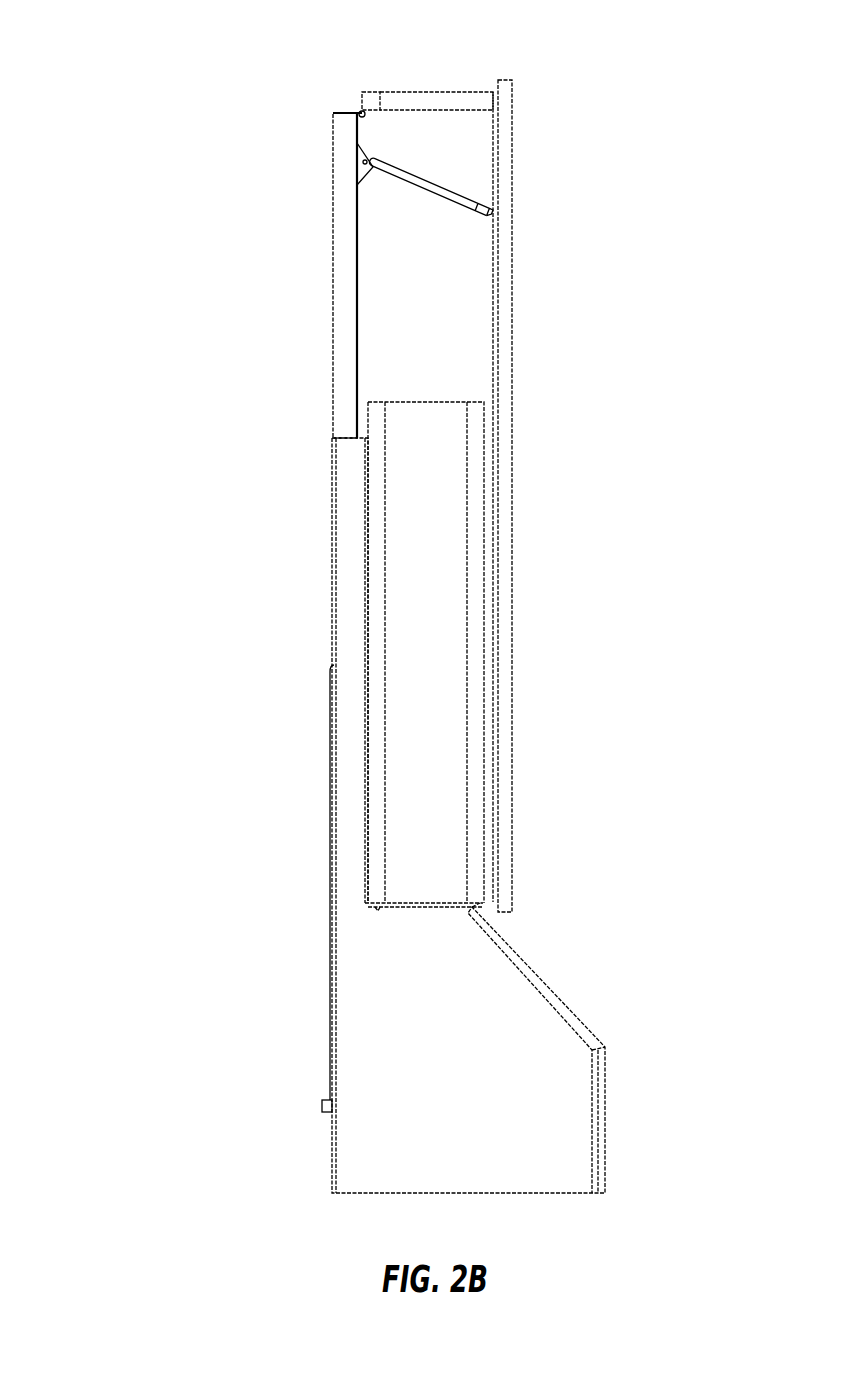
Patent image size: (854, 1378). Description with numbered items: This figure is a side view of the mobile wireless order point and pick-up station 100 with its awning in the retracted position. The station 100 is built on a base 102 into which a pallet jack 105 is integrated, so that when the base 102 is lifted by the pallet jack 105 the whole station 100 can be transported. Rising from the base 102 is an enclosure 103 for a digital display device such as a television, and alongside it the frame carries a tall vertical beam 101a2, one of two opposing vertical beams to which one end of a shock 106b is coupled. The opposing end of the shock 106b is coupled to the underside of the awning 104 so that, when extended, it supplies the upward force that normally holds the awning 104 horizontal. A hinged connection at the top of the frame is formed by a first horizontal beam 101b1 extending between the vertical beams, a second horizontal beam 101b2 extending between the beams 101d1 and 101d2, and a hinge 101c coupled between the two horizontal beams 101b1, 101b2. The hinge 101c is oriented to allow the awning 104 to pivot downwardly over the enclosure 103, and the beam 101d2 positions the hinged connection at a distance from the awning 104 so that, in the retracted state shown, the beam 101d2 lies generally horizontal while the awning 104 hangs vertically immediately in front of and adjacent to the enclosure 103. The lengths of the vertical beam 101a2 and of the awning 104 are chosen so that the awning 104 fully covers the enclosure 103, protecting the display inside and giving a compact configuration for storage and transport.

The station 100 is at (115, 115).
The vertical beam 101a2 is at (332, 273).
The first horizontal beam 101b1 is at (363, 112).
The second horizontal beam 101b2 is at (330, 113).
The hinge 101c is at (358, 108).
The vertical beam 101d2 is at (463, 91).
The base 102 is at (570, 1007).
The enclosure 103 is at (428, 850).
The awning 104 is at (511, 143).
The pallet jack 105 is at (322, 1103).
The shock 106b is at (467, 195).